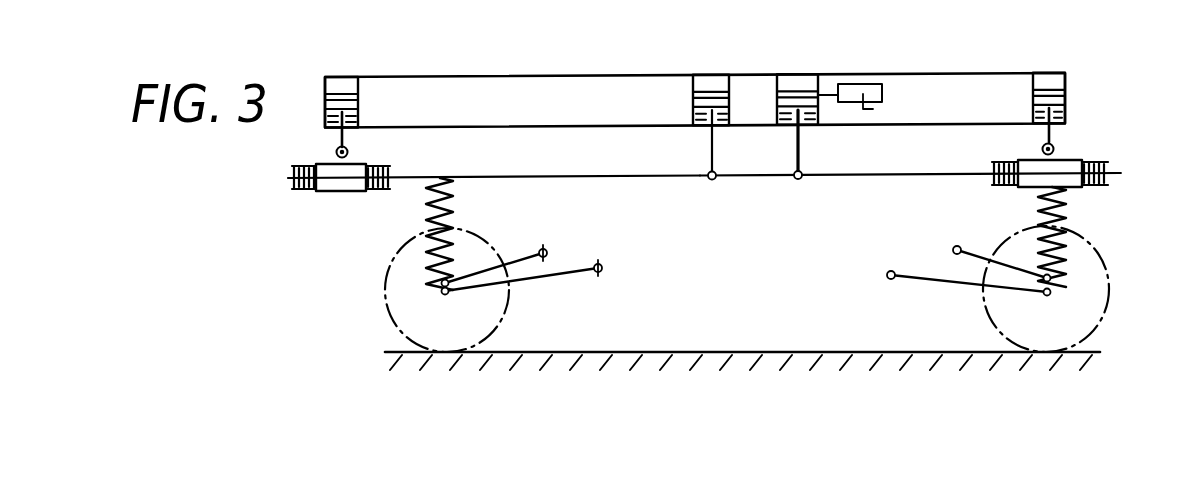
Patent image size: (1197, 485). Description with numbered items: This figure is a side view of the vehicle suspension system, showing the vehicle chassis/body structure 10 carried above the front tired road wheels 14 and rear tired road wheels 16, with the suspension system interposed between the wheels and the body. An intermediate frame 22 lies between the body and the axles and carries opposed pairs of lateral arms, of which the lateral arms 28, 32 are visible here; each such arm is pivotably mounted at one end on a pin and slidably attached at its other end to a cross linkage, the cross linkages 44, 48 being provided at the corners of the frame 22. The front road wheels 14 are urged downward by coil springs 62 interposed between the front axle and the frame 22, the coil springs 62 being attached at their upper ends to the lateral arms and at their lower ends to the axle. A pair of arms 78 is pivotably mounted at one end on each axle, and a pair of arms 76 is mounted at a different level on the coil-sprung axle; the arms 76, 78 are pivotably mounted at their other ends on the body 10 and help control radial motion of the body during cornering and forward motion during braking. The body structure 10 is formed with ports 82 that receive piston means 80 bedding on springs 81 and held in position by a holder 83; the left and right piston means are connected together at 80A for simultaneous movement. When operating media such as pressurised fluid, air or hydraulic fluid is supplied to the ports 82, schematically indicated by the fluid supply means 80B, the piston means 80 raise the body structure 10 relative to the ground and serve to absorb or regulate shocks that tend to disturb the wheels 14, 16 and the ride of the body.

The vehicle chassis/body structure 10 is at (442, 56).
The front tired road wheels 14 is at (383, 289).
The rear tired road wheels 16 is at (1097, 255).
The intermediate frame 22 is at (1078, 140).
The lateral arm 28 is at (607, 177).
The lateral arm 32 is at (905, 176).
The cross linkage 44 is at (348, 181).
The cross linkage 48 is at (1053, 168).
The coil springs 62 is at (452, 180).
The arms 76 is at (480, 273).
The arms 78 is at (570, 270).
The piston means 80 is at (693, 96).
The connection of piston means 80A is at (794, 179).
The fluid supply means 80B is at (878, 106).
The springs 81 is at (357, 118).
The ports 82 is at (342, 86).
The holder 83 is at (348, 131).